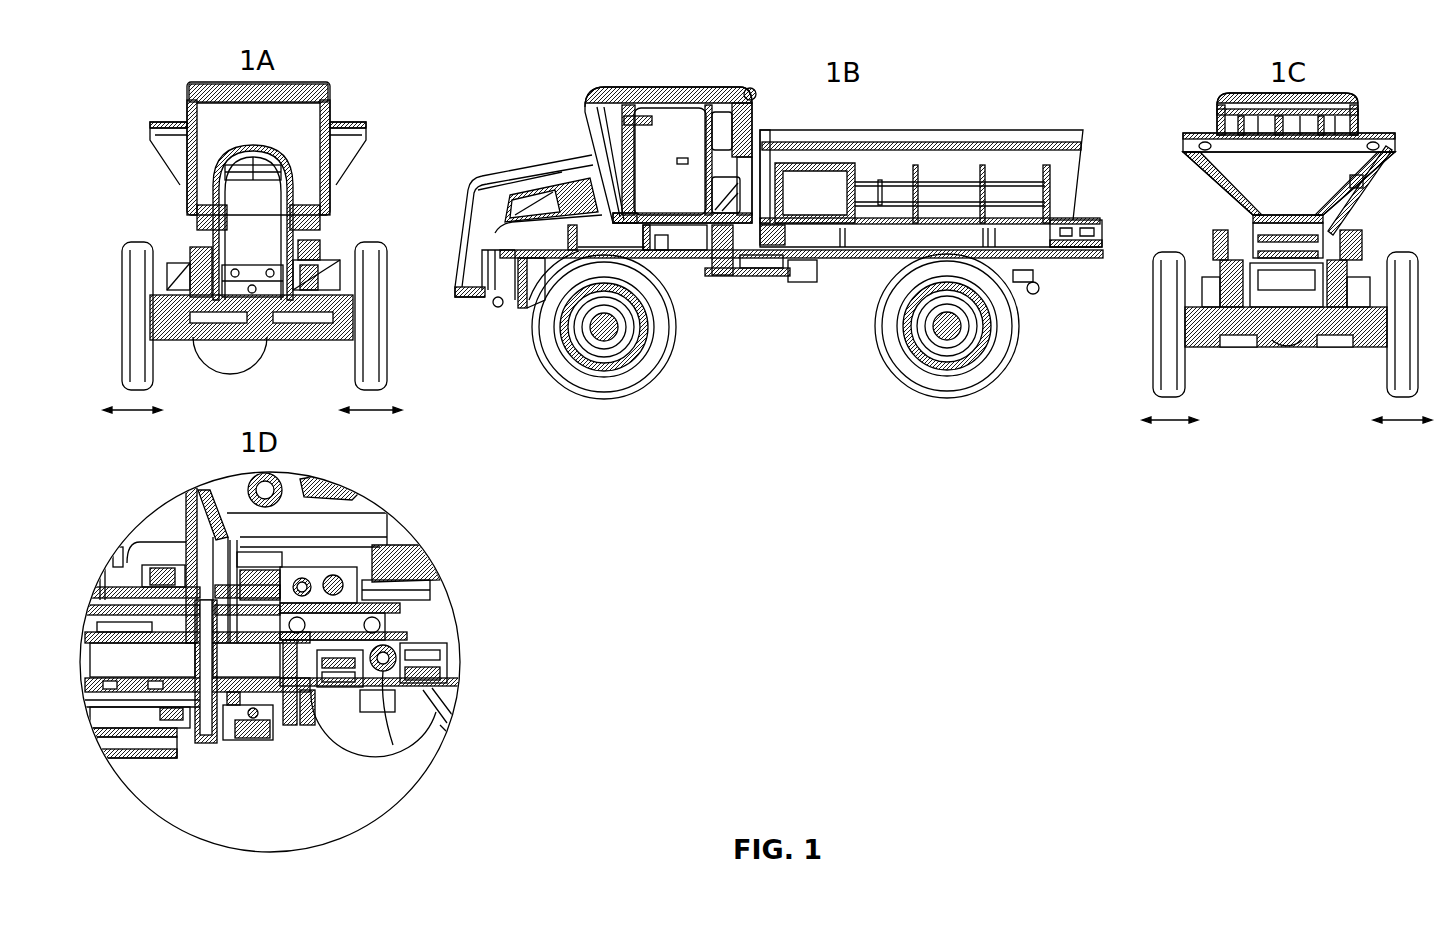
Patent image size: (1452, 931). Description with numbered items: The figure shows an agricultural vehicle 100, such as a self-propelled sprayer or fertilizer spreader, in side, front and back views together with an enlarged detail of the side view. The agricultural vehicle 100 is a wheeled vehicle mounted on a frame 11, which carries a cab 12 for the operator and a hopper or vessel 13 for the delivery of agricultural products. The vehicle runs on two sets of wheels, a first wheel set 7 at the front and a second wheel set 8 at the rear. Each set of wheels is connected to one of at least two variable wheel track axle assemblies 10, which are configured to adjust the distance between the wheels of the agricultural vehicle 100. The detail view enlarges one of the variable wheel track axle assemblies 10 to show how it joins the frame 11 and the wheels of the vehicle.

The agricultural vehicle 100 is at (1118, 58).
The first wheel set 7 is at (138, 240).
The second wheel set 8 is at (897, 348).
The variable wheel track axle assembly 10 is at (265, 345).
The frame 11 is at (833, 270).
The cab 12 is at (303, 131).
The hopper or vessel 13 is at (1355, 157).